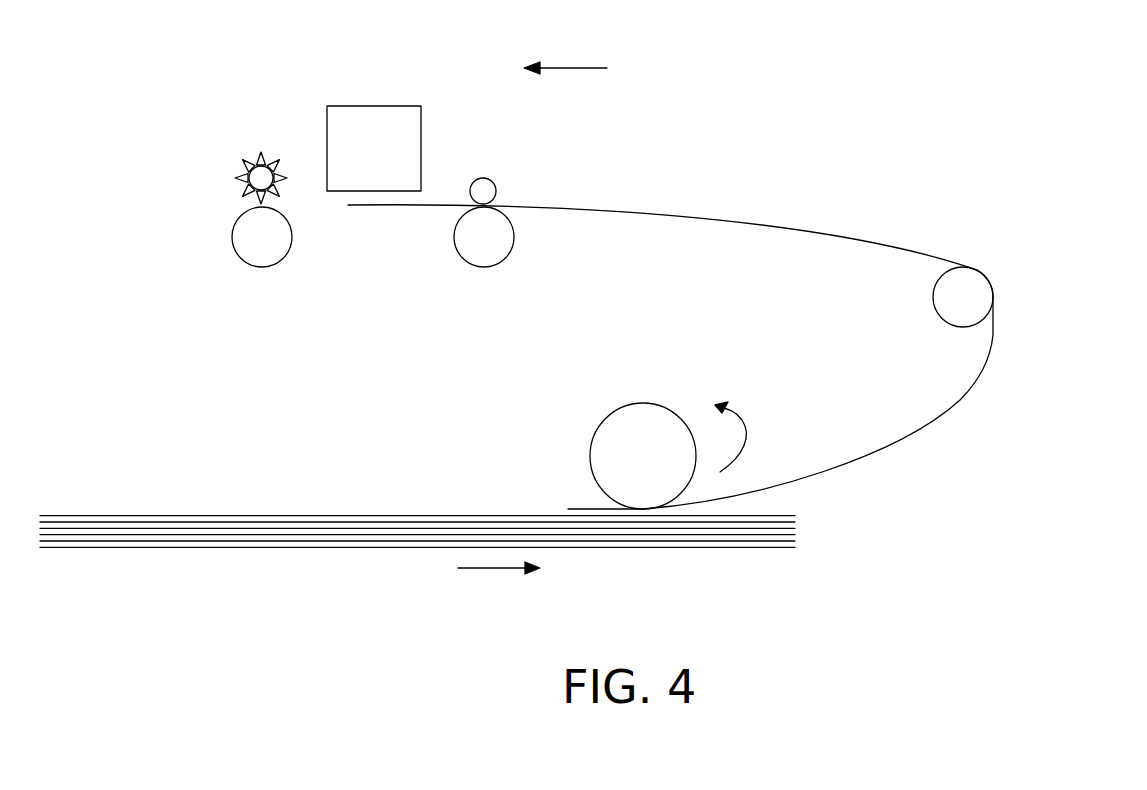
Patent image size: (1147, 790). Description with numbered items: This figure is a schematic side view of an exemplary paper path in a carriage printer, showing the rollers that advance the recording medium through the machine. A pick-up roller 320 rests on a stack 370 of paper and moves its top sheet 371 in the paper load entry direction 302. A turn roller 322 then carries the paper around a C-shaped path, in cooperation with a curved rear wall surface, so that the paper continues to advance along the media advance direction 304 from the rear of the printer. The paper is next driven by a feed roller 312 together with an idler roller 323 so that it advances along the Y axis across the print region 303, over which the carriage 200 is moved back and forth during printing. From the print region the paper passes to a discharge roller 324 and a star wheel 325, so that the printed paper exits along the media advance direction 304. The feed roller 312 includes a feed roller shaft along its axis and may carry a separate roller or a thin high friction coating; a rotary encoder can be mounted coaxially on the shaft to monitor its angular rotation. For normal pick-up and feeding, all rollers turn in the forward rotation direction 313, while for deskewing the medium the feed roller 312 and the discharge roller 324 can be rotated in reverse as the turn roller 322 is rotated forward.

The carriage 200 is at (365, 106).
The paper load entry direction 302 is at (488, 570).
The print region 303 is at (392, 196).
The media advance direction 304 is at (572, 66).
The feed roller 312 is at (507, 240).
The forward rotation direction 313 is at (745, 437).
The pick-up roller 320 is at (608, 415).
The turn roller 322 is at (975, 280).
The idler roller 323 is at (485, 178).
The discharge roller 324 is at (283, 244).
The star wheel 325 is at (252, 160).
The stack 370 is at (806, 528).
The sheet 371 is at (858, 470).